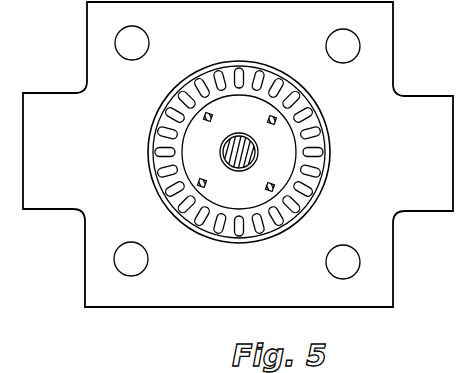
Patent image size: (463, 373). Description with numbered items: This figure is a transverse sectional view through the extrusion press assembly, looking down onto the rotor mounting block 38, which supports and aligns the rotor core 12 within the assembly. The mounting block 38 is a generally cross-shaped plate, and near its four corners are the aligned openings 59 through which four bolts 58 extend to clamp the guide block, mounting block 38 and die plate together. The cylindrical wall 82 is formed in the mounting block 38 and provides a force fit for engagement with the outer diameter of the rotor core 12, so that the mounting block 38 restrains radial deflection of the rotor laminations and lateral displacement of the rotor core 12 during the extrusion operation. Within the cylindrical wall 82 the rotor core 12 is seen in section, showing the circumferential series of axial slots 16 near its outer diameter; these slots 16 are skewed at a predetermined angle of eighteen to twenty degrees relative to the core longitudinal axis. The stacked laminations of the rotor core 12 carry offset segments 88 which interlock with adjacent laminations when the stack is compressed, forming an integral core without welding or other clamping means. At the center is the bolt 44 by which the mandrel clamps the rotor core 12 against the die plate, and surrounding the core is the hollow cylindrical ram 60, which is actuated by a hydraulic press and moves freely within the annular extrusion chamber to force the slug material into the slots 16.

The rotor core 12 is at (334, 168).
The axial slots 16 is at (293, 97).
The rotor mounting block 38 is at (368, 294).
The bolt 44 is at (258, 153).
The bolts 58 is at (247, 151).
The openings 59 is at (128, 60).
The ram 60 is at (323, 184).
The cylindrical wall 82 is at (201, 64).
The offset segments 88 is at (268, 120).